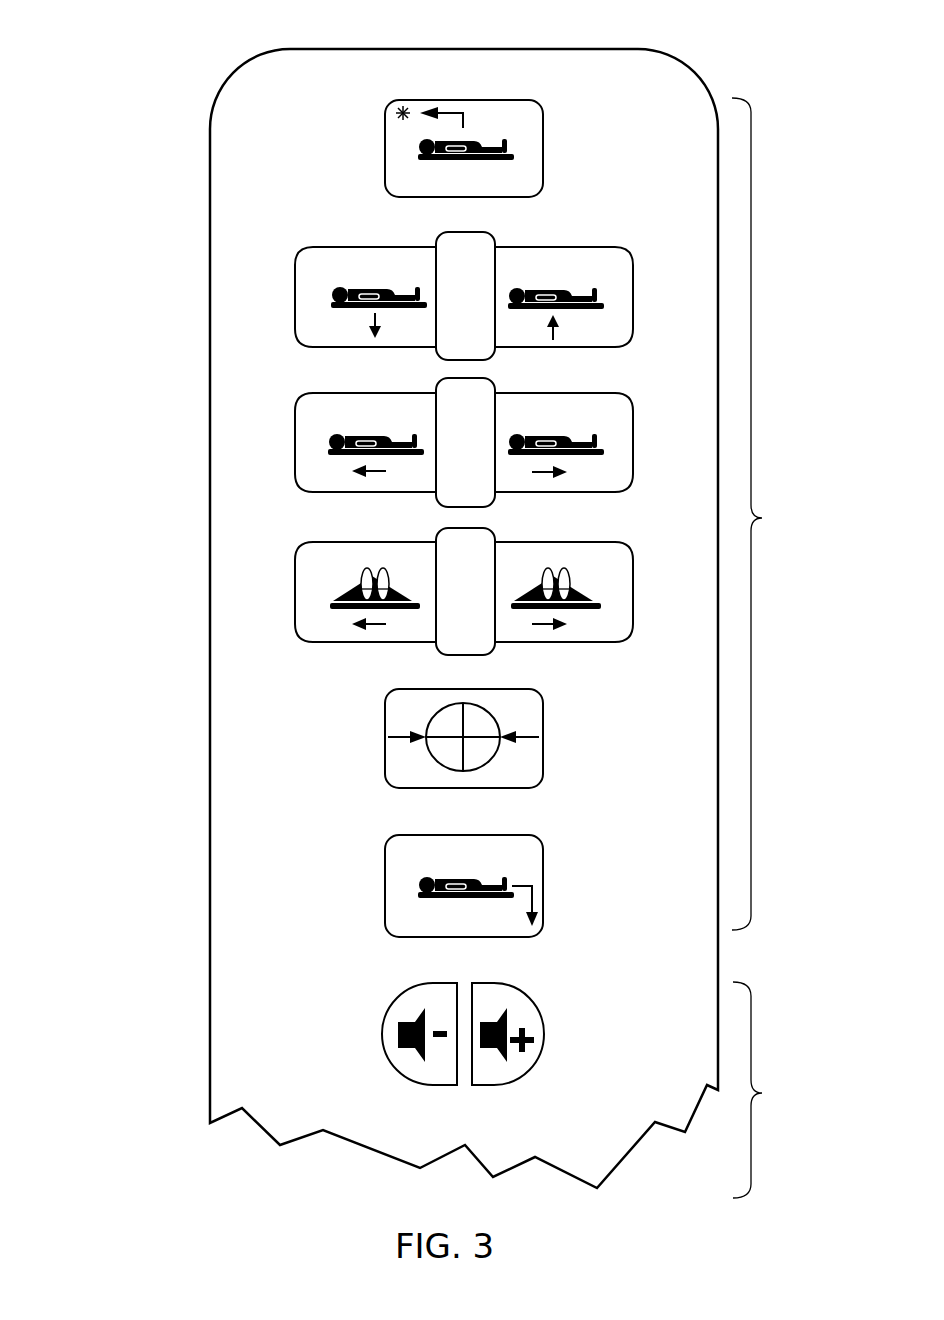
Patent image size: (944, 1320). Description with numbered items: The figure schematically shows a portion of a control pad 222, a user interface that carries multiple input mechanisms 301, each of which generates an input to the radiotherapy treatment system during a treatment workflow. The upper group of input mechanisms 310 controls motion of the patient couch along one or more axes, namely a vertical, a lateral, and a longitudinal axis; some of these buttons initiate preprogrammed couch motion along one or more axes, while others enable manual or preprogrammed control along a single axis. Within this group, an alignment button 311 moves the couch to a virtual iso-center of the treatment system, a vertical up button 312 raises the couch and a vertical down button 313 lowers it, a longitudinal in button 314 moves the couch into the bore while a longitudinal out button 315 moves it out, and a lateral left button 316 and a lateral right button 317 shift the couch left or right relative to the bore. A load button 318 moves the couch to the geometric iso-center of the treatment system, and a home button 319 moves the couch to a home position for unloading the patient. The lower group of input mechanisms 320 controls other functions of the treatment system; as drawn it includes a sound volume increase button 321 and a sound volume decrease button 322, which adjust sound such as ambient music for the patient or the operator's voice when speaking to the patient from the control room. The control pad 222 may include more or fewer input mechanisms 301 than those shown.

The control pad 222 is at (150, 48).
The input mechanisms 301 is at (308, 137).
The input mechanisms 310 is at (762, 518).
The alignment button 311 is at (543, 143).
The vertical up button 312 is at (581, 246).
The vertical down button 313 is at (342, 246).
The longitudinal in button 314 is at (318, 392).
The longitudinal out button 315 is at (596, 392).
The lateral left button 316 is at (318, 541).
The lateral right button 317 is at (596, 541).
The load button 318 is at (385, 727).
The home button 319 is at (385, 881).
The input mechanisms 320 is at (762, 1093).
The sound volume increase button 321 is at (521, 995).
The sound volume decrease button 322 is at (406, 995).